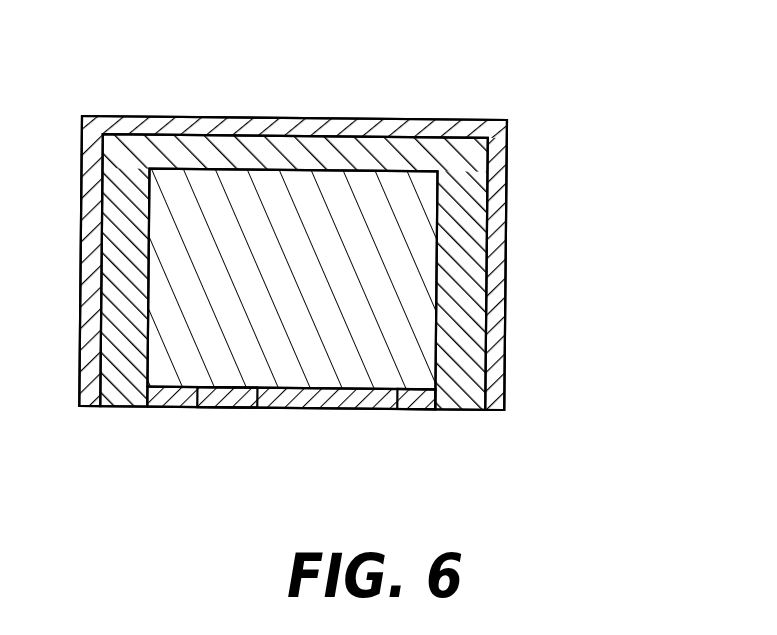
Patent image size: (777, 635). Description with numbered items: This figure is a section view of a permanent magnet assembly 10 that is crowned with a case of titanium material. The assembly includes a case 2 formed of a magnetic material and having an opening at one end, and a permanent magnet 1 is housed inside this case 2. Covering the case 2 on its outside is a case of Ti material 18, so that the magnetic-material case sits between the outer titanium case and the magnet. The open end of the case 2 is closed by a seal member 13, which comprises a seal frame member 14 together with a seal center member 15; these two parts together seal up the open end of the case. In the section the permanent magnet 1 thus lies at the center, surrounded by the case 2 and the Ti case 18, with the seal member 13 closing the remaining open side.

The laminated article 10 is at (304, 92).
The permanent magnet 1 is at (410, 215).
The case 2 is at (467, 298).
The case of Ti material 18 is at (497, 221).
The seal member 13 is at (310, 418).
The seal frame member 14 is at (420, 404).
The seal center member 15 is at (238, 395).